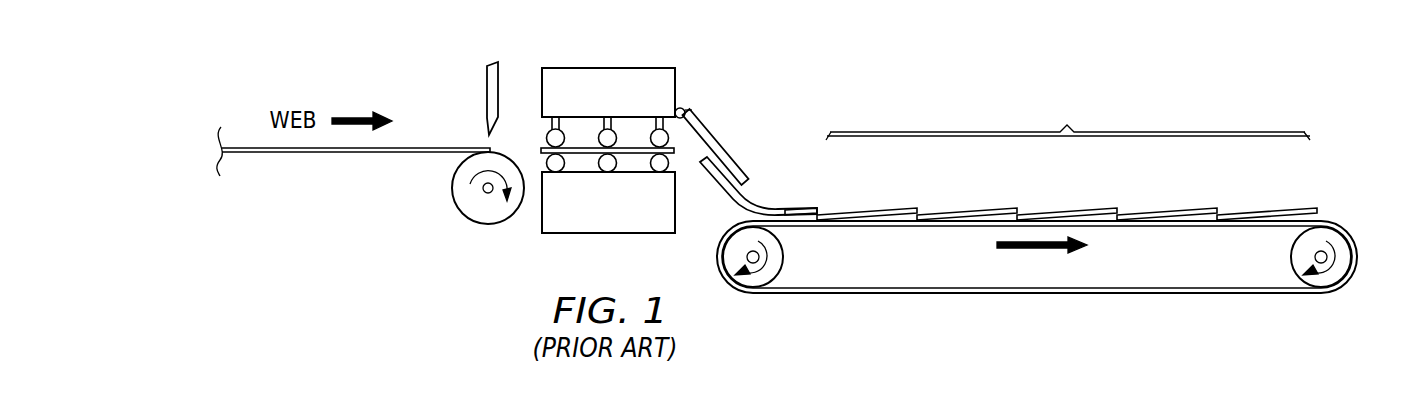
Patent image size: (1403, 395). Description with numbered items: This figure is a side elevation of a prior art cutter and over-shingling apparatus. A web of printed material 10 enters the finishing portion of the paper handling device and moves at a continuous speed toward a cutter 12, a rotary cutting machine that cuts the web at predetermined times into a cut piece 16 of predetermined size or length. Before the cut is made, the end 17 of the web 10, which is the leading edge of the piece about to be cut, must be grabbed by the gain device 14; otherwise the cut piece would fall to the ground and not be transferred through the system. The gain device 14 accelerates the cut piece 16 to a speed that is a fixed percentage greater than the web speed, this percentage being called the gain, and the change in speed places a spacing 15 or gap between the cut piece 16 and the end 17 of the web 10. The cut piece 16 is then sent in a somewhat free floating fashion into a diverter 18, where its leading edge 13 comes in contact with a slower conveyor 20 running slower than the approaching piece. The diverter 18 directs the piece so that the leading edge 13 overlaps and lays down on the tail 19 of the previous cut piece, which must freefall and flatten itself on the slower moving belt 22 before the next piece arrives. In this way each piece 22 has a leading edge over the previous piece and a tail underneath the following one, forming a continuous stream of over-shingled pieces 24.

The web 10 is at (383, 153).
The cutter 12 is at (487, 76).
The leading edge 13 is at (673, 144).
The gain device 14 is at (582, 68).
The spacing 15 is at (517, 134).
The cut piece 16 is at (583, 164).
The end of the web 17 is at (487, 148).
The diverter 18 is at (744, 165).
The tail 19 is at (800, 224).
The conveyor 20 is at (1037, 287).
The belt 22 is at (862, 210).
The stream of over-shingled pieces 24 is at (1068, 117).